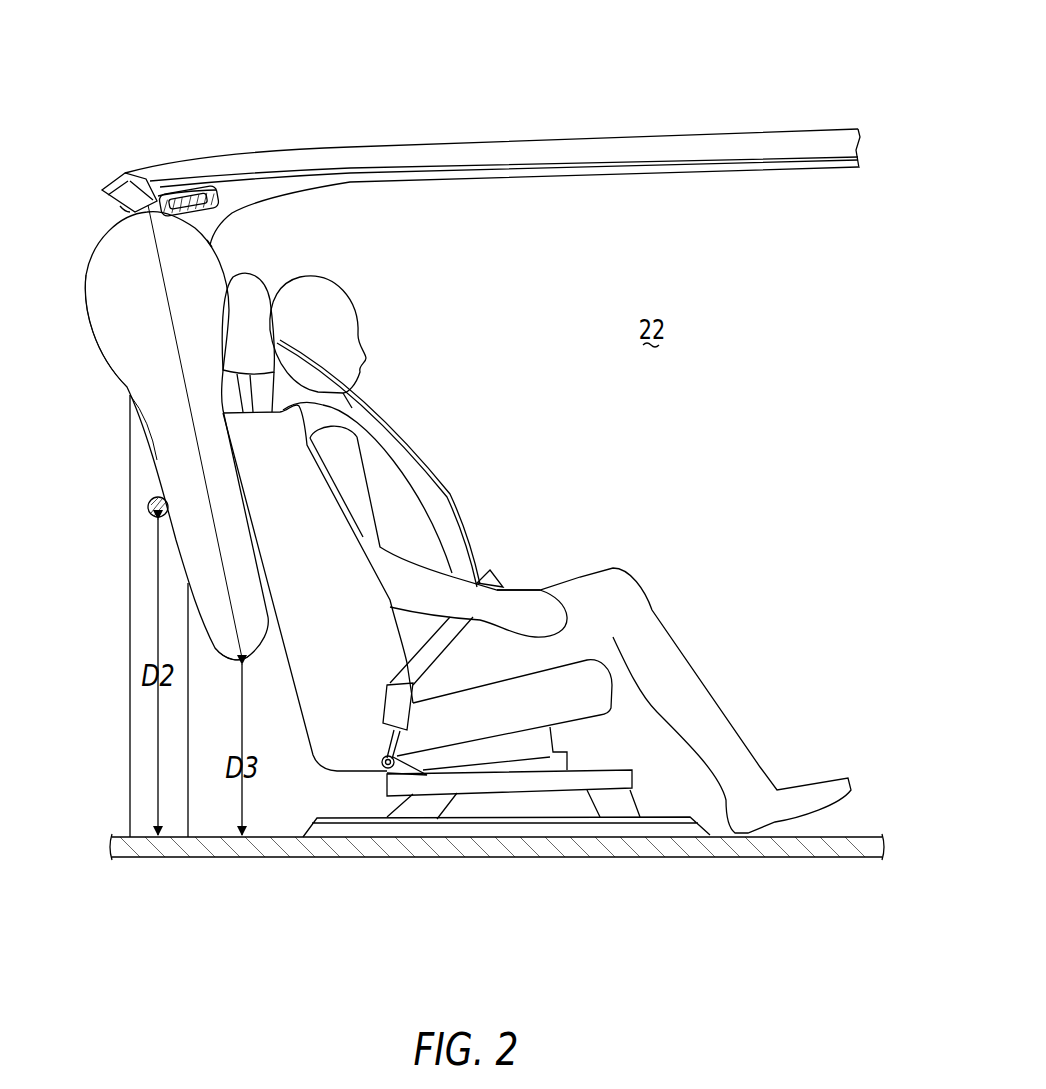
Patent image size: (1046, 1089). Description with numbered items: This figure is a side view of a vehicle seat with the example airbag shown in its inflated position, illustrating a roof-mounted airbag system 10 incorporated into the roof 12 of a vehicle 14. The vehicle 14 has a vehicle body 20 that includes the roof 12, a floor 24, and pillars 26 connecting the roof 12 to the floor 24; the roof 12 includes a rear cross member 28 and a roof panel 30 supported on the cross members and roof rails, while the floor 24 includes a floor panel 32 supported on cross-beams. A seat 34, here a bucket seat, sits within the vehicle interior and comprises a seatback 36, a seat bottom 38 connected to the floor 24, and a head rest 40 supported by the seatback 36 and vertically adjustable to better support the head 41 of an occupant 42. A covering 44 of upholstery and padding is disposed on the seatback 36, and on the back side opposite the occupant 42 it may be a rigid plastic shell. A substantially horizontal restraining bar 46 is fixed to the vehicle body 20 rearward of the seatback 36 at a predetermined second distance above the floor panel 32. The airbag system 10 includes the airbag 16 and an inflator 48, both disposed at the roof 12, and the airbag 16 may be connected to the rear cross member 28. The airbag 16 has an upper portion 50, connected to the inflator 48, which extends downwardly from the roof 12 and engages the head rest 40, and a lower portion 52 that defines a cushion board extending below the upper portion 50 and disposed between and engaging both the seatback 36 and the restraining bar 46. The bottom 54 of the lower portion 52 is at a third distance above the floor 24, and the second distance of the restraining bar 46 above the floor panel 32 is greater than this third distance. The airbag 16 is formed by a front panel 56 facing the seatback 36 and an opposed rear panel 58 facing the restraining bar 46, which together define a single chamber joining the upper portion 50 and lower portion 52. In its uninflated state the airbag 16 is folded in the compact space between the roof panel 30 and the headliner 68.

The roof-mounted airbag system 10 is at (80, 183).
The roof 12 is at (386, 135).
The vehicle 14 is at (541, 64).
The airbag 16 is at (103, 347).
The vehicle body 20 is at (571, 127).
The floor 24 is at (557, 862).
The pillars 26 is at (130, 612).
The rear cross member 28 is at (222, 198).
The roof panel 30 is at (697, 128).
The floor panel 32 is at (270, 840).
The seat 34 is at (609, 662).
The seatback 36 is at (293, 705).
The seat bottom 38 is at (617, 700).
The head rest 40 is at (250, 274).
The head 41 is at (347, 293).
The occupant 42 is at (403, 473).
The covering 44 is at (302, 578).
The restraining bar 46 is at (151, 499).
The inflator 48 is at (148, 205).
The upper portion 50 is at (85, 300).
The lower portion 52 is at (157, 460).
The bottom 54 is at (240, 664).
The front panel 56 is at (212, 243).
The rear panel 58 is at (84, 292).
The headliner 68 is at (274, 200).